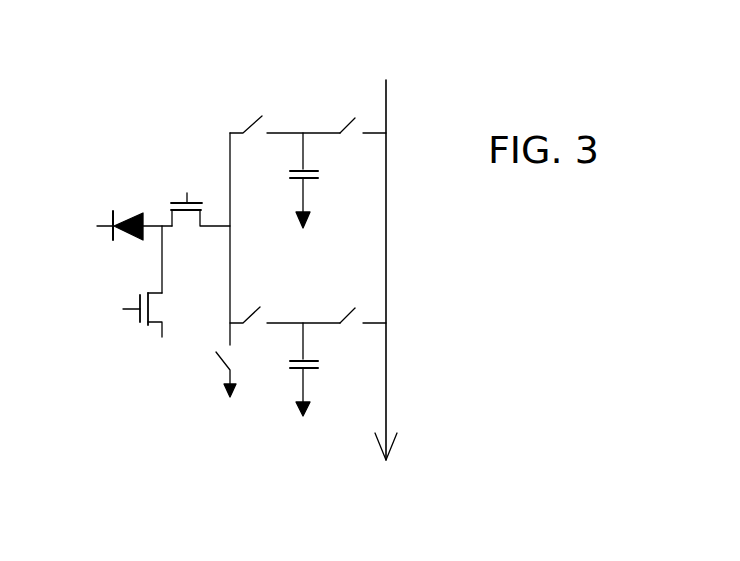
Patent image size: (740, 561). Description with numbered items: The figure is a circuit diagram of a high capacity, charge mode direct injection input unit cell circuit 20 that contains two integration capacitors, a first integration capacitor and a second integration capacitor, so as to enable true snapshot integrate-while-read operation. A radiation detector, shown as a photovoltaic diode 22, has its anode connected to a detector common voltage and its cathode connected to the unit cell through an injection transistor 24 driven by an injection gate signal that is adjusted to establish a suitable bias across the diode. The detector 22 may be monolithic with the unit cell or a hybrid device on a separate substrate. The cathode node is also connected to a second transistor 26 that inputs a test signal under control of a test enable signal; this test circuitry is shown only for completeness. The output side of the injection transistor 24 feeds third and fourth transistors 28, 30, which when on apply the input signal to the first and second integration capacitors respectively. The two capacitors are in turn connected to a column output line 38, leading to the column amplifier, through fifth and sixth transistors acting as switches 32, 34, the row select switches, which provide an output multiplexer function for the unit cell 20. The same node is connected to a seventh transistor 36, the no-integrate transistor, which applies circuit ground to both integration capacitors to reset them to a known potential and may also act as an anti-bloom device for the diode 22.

The unit cell circuit 20 is at (92, 430).
The photovoltaic diode 22 is at (128, 211).
The injection transistor 24 is at (194, 227).
The second transistor 26 is at (129, 329).
The third transistor 28 is at (247, 143).
The fourth transistor 30 is at (245, 330).
The fifth transistor switch 32 is at (350, 109).
The sixth transistor switch 34 is at (348, 308).
The seventh transistor 36 is at (220, 375).
The column output line 38 is at (387, 265).